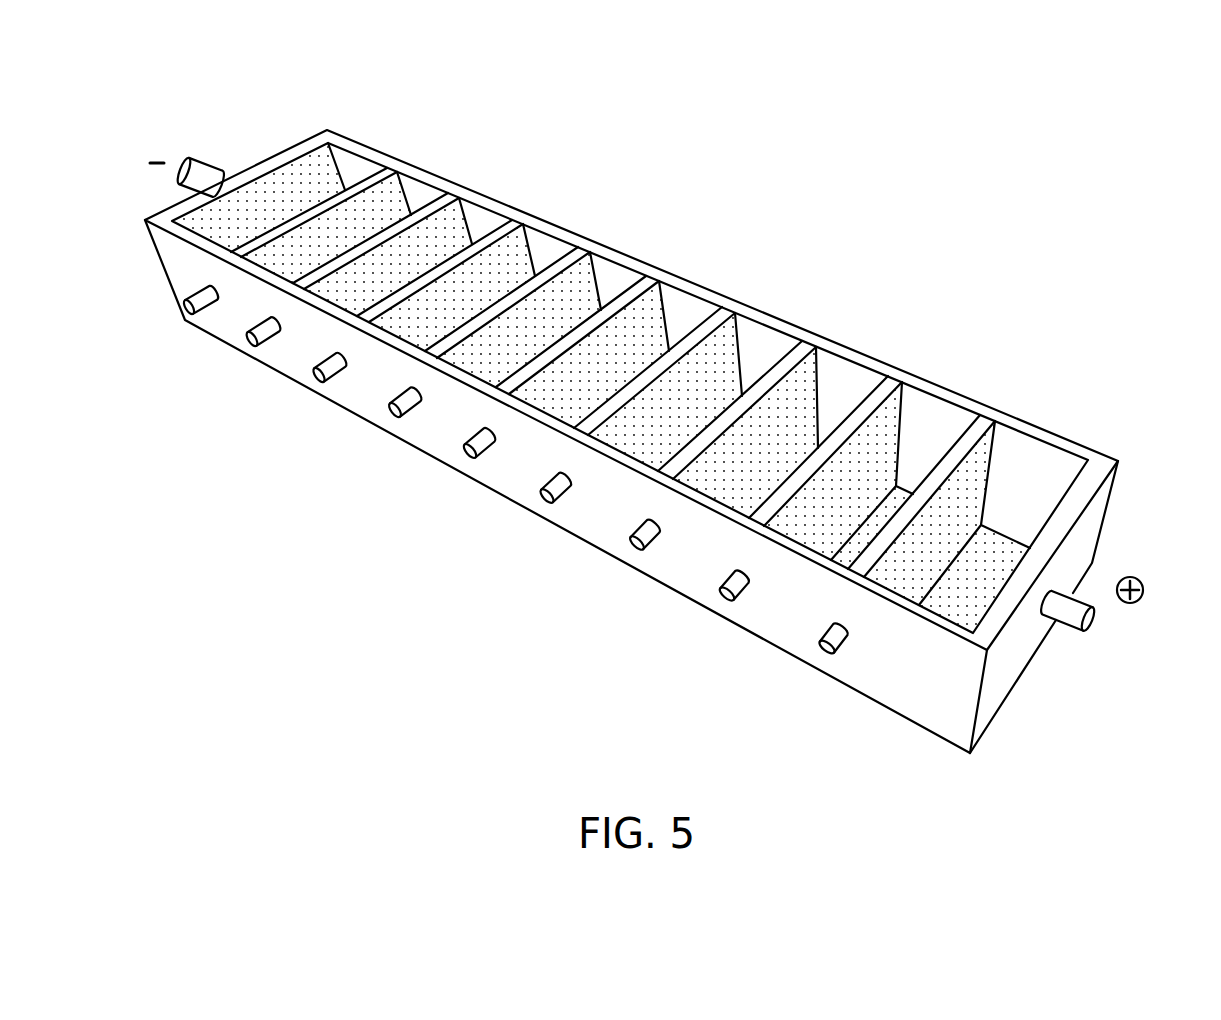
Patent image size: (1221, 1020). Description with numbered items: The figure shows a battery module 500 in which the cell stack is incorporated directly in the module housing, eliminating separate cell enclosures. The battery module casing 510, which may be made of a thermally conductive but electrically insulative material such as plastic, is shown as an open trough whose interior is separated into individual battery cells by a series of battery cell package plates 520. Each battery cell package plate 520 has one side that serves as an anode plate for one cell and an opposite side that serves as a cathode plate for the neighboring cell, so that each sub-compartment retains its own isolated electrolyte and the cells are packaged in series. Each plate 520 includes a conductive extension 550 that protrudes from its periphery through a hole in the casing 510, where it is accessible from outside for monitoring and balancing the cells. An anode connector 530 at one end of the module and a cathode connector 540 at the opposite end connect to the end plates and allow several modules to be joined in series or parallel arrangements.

The battery module 500 is at (643, 429).
The battery module casing 510 is at (903, 707).
The battery cell package plate 520 is at (313, 200).
The anode connector 530 is at (202, 153).
The cathode connector 540 is at (1100, 627).
The conductive extension 550 is at (817, 645).